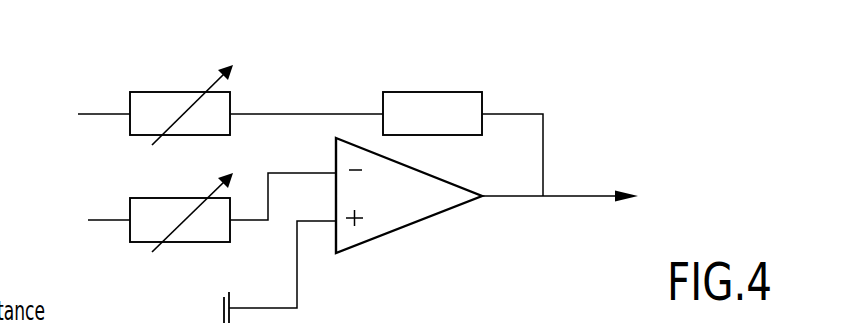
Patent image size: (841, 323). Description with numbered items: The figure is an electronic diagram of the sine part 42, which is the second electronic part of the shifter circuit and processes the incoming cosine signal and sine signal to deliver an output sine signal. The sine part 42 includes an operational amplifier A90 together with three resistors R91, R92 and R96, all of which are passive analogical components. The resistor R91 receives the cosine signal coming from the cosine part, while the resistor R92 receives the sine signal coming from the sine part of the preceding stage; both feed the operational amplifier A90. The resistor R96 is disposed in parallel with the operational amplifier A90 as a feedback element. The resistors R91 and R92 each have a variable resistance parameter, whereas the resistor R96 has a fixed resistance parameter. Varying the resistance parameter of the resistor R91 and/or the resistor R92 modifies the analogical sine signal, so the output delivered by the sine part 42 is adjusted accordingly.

The sine part 42 is at (131, 58).
The resistor R91 is at (181, 105).
The resistor R92 is at (181, 212).
The resistor R96 is at (432, 113).
The operational amplifier A90 is at (409, 195).